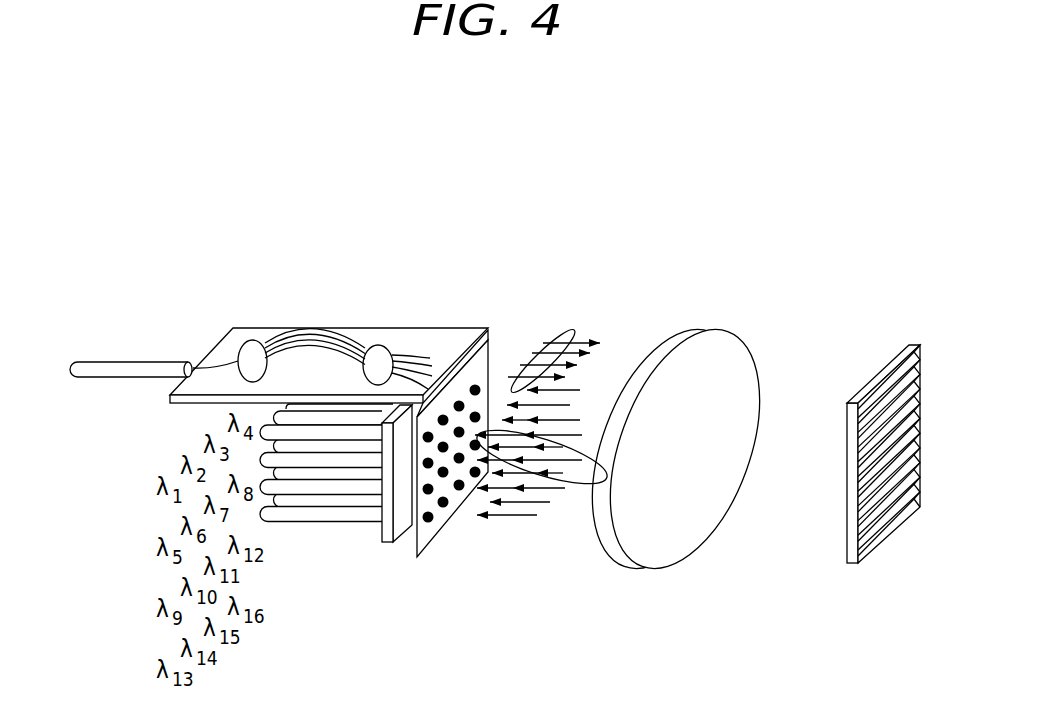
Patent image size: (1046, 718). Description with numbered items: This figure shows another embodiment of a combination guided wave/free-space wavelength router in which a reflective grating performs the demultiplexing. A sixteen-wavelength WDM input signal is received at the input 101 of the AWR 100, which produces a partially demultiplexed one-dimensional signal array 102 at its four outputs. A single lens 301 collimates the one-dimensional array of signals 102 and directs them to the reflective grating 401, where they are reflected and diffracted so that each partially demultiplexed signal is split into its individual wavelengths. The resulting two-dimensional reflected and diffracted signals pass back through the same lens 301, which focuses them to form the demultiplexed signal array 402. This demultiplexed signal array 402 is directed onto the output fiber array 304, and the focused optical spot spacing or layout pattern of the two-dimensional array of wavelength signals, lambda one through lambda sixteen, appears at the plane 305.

The AWR 100 is at (493, 290).
The input 101 is at (130, 362).
The partially demultiplexed one-dimensional signal array 102 is at (574, 330).
The lens 301 is at (703, 327).
The output fiber array 304 is at (387, 542).
The plane 305 is at (448, 525).
The reflective grating 401 is at (883, 375).
The demultiplexed signal array 402 is at (522, 522).